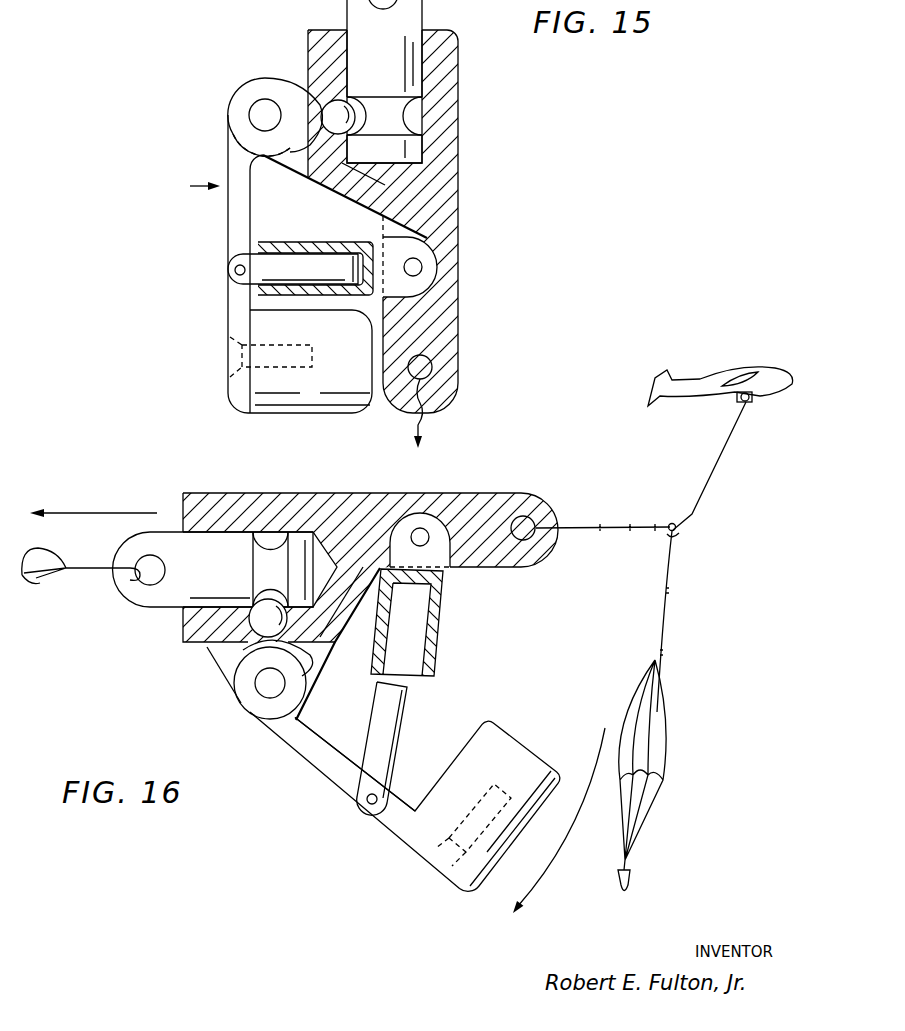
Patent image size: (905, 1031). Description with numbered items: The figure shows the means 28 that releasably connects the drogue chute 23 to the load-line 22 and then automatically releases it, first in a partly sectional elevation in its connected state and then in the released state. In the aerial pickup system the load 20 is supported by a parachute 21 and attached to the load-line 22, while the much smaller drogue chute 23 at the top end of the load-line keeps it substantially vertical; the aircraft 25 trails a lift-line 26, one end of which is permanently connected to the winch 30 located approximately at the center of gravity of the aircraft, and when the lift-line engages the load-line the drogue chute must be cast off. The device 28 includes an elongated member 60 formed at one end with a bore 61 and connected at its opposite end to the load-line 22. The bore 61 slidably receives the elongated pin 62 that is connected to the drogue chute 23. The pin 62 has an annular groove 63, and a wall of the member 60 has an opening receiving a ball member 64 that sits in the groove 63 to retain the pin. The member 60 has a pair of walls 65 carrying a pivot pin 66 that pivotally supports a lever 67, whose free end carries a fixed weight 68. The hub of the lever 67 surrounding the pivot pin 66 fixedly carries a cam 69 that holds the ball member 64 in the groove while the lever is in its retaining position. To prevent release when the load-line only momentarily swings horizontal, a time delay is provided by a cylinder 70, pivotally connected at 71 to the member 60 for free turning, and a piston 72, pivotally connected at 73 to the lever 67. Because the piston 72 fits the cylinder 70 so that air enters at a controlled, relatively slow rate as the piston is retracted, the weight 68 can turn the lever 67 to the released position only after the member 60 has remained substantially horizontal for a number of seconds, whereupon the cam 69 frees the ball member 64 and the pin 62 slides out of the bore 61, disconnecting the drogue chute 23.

In FIG. 16, the load 20 is at (630, 889).
In FIG. 16, the parachute 21 is at (655, 752).
In FIG. 15, the load-line 22 is at (424, 423).
In FIG. 16, the load-line 22 is at (603, 518).
In FIG. 16, the drogue chute 23 is at (33, 584).
In FIG. 16, the aircraft 25 is at (760, 373).
In FIG. 16, the lift-line 26 is at (711, 479).
In FIG. 15, the means for releasably connecting the drogue chute 28 is at (191, 187).
In FIG. 16, the winch 30 is at (750, 403).
In FIG. 15, the elongated member 60 is at (450, 167).
In FIG. 16, the elongated member 60 is at (370, 552).
In FIG. 15, the bore 61 is at (370, 167).
In FIG. 16, the bore 61 is at (321, 553).
In FIG. 15, the elongated pin 62 is at (417, 10).
In FIG. 16, the elongated pin 62 is at (136, 593).
In FIG. 15, the annular groove 63 is at (392, 130).
In FIG. 16, the annular groove 63 is at (279, 583).
In FIG. 15, the ball member 64 is at (335, 122).
In FIG. 16, the ball member 64 is at (257, 640).
In FIG. 15, the walls 65 is at (293, 70).
In FIG. 16, the walls 65 is at (230, 672).
In FIG. 15, the pivot pin 66 is at (262, 110).
In FIG. 16, the pivot pin 66 is at (268, 690).
In FIG. 15, the lever 67 is at (235, 232).
In FIG. 16, the lever 67 is at (332, 773).
In FIG. 15, the weight 68 is at (318, 342).
In FIG. 16, the weight 68 is at (490, 748).
In FIG. 15, the cam 69 is at (313, 115).
In FIG. 16, the cam 69 is at (305, 655).
In FIG. 15, the cylinder 70 is at (307, 232).
In FIG. 16, the cylinder 70 is at (430, 660).
In FIG. 15, the pivotal connection of cylinder 71 is at (416, 273).
In FIG. 16, the pivotal connection of cylinder 71 is at (423, 530).
In FIG. 15, the piston 72 is at (302, 279).
In FIG. 16, the piston 72 is at (392, 738).
In FIG. 15, the pivotal connection of piston 73 is at (236, 275).
In FIG. 16, the pivotal connection of piston 73 is at (372, 806).